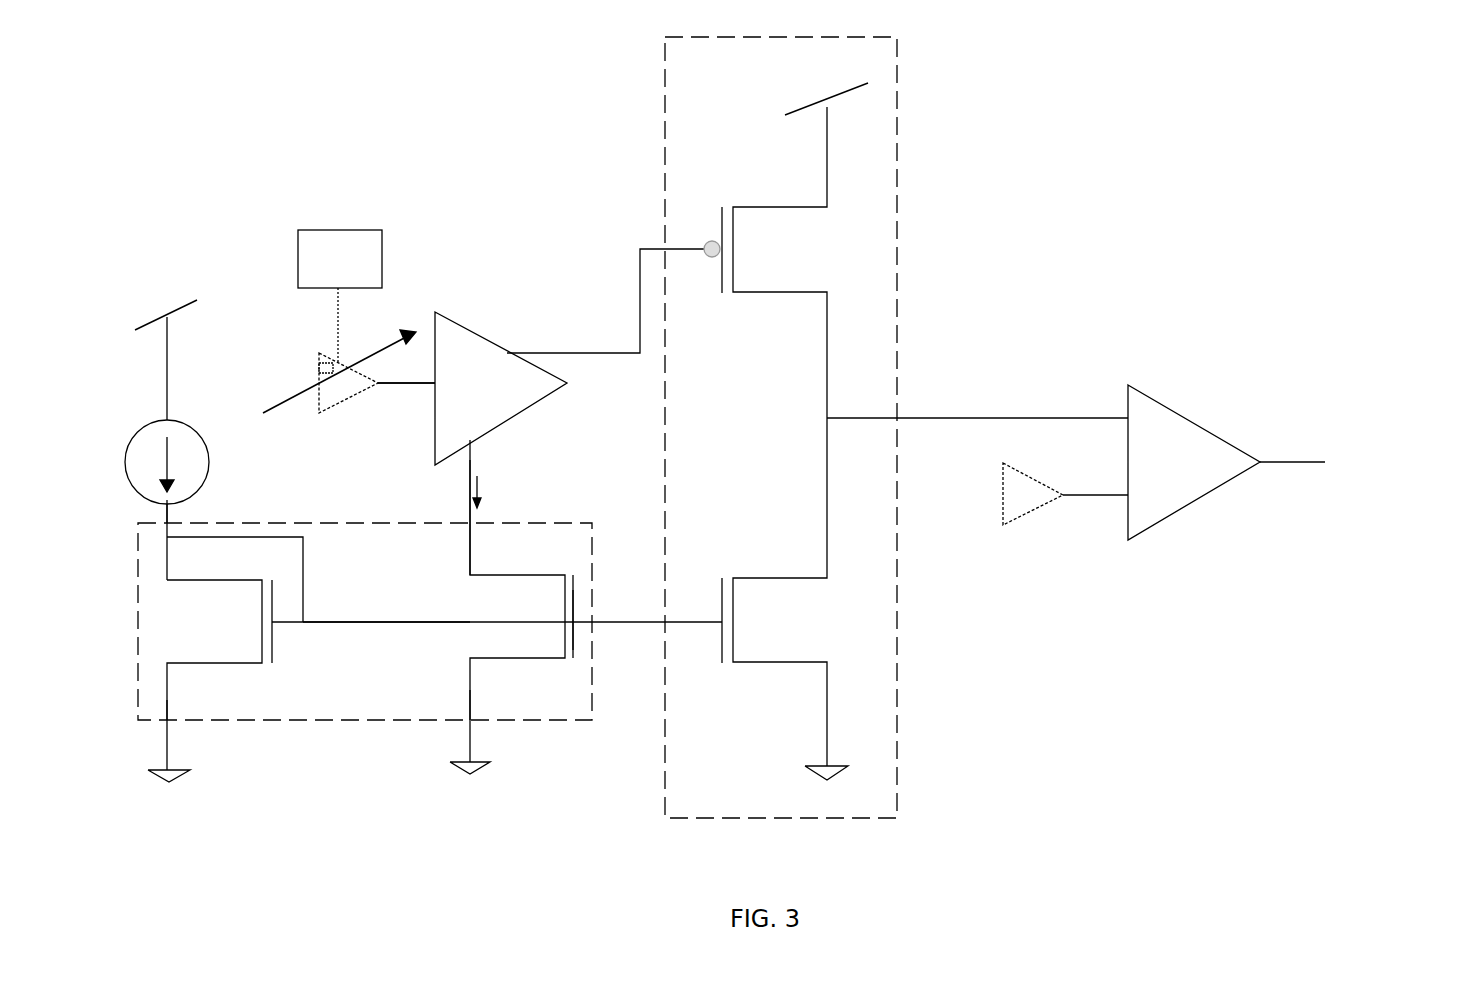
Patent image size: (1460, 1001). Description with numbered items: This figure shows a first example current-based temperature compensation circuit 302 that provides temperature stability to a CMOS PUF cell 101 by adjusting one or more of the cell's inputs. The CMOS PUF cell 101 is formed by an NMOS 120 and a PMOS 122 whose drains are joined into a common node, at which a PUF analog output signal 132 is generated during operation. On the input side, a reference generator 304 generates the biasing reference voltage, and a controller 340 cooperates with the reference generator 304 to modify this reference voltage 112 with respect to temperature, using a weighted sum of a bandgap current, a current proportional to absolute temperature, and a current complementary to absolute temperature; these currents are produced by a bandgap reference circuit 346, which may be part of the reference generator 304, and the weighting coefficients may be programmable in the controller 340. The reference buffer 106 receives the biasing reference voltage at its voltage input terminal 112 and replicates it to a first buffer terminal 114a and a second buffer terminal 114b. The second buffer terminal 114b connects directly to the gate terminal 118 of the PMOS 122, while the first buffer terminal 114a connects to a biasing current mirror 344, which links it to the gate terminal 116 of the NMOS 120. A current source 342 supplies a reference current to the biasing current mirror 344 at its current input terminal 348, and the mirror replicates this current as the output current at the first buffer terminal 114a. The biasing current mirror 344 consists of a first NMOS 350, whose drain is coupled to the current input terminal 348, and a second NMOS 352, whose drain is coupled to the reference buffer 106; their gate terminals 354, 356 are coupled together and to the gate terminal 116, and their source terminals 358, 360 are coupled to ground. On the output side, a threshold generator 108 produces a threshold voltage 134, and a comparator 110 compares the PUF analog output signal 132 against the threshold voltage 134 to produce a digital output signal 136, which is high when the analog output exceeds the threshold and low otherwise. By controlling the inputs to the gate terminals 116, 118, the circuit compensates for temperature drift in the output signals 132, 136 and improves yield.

The current-based temperature compensation circuit 302 is at (172, 95).
The current source 342 is at (136, 438).
The current input terminal 348 is at (170, 515).
The biasing current mirror 344 is at (138, 620).
The first NMOS 350 is at (272, 648).
The second NMOS 352 is at (472, 666).
The gate terminal 354 is at (292, 624).
The gate terminal 356 is at (575, 628).
The source terminal 358 is at (169, 709).
The source terminal 360 is at (472, 708).
The controller 340 is at (340, 296).
The reference generator 304 is at (328, 408).
The bandgap reference circuit 346 is at (317, 368).
The voltage input terminal 112 is at (394, 386).
The reference buffer 106 is at (501, 388).
The first buffer terminal 114a is at (472, 468).
The second buffer terminal 114b is at (535, 348).
The CMOS PUF cell 101 is at (897, 50).
The PMOS 122 is at (752, 207).
The gate terminal 118 is at (685, 251).
The NMOS 120 is at (745, 578).
The gate terminal 116 is at (695, 624).
The PUF analog output signal 132 is at (853, 416).
The comparator 110 is at (1174, 415).
The threshold generator 108 is at (1030, 478).
The threshold voltage 134 is at (1096, 493).
The digital output signal 136 is at (1302, 464).